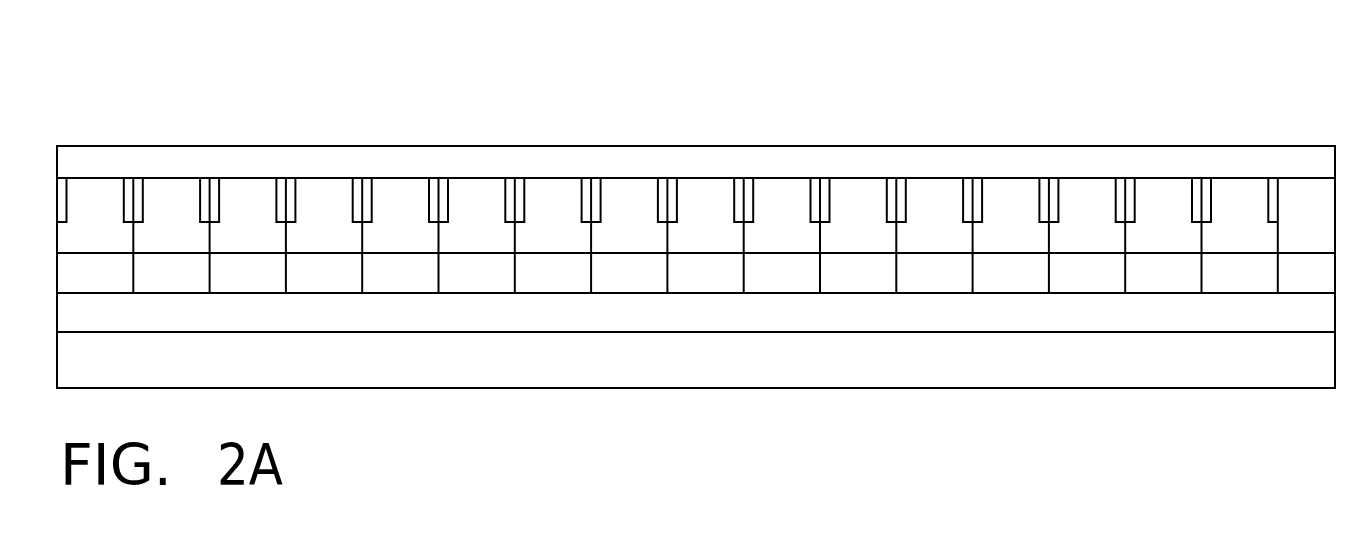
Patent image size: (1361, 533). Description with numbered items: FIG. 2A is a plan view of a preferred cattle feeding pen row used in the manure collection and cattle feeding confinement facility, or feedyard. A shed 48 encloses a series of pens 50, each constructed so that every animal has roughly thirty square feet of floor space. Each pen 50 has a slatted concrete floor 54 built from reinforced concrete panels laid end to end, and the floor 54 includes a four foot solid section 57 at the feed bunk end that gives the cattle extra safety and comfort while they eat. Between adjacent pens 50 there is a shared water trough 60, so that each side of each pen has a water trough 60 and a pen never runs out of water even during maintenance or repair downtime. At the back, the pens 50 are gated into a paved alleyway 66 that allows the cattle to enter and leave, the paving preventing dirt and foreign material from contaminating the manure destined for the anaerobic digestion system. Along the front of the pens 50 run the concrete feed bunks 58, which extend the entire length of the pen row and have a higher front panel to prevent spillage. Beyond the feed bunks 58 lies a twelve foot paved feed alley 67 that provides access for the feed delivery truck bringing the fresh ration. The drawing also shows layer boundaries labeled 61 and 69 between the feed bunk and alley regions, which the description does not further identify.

The shed 48 is at (585, 133).
The paved alleyway 66 is at (212, 162).
The water trough 60 is at (435, 183).
The pen 50 is at (778, 205).
The floor 54 is at (156, 225).
The solid section 57 is at (156, 285).
The interface line / layer boundary 61 is at (718, 294).
The interface line / layer boundary 69 is at (552, 331).
The feed bunk 58 is at (480, 325).
The feed alley 67 is at (700, 372).